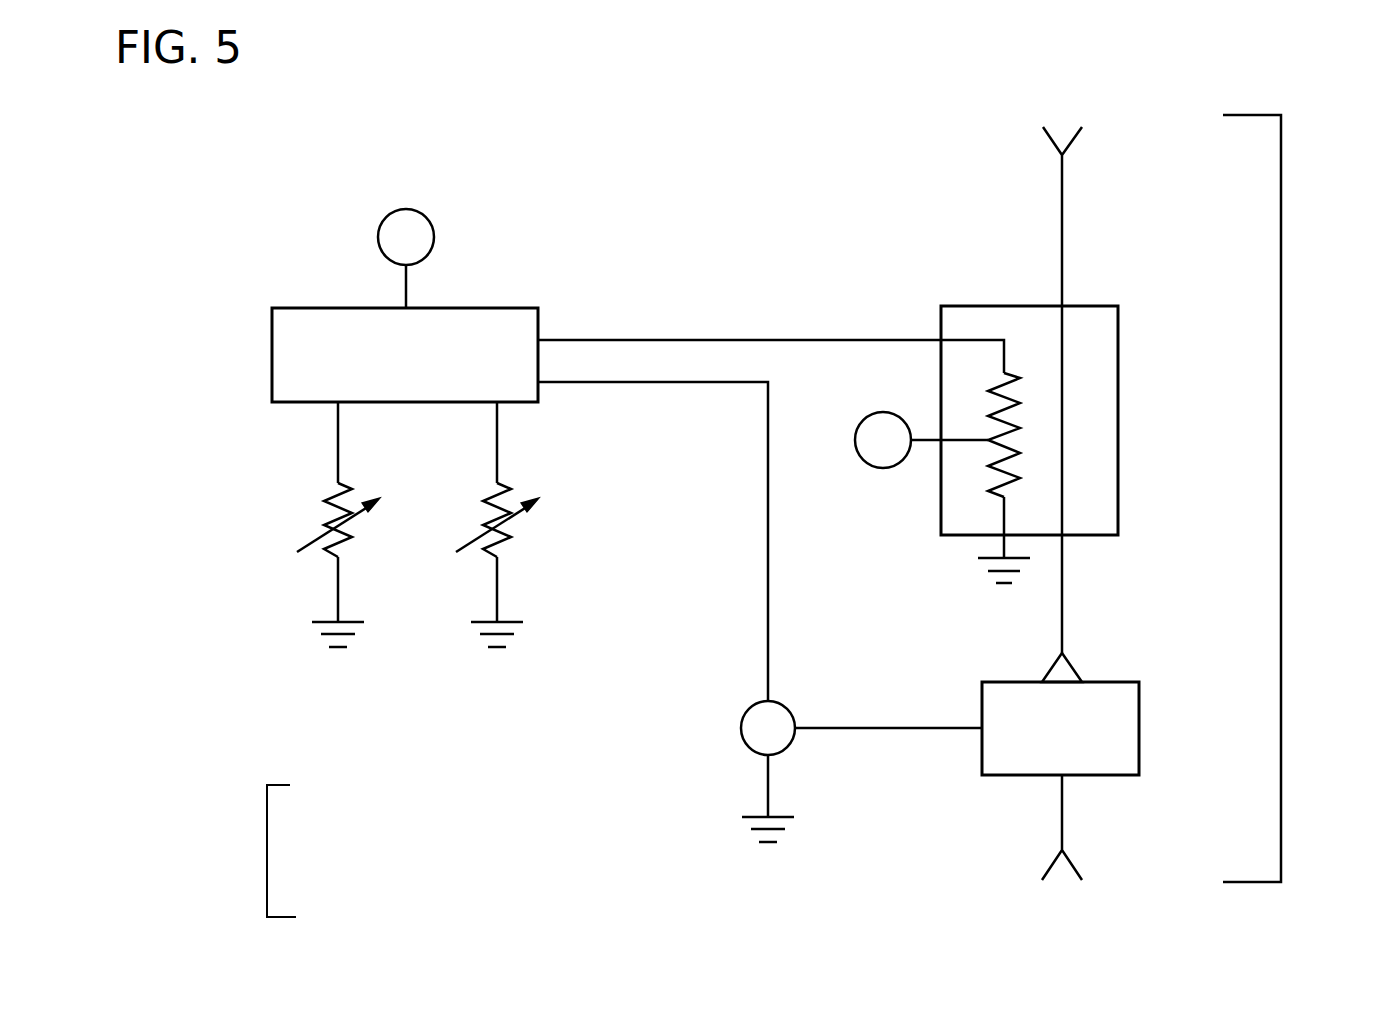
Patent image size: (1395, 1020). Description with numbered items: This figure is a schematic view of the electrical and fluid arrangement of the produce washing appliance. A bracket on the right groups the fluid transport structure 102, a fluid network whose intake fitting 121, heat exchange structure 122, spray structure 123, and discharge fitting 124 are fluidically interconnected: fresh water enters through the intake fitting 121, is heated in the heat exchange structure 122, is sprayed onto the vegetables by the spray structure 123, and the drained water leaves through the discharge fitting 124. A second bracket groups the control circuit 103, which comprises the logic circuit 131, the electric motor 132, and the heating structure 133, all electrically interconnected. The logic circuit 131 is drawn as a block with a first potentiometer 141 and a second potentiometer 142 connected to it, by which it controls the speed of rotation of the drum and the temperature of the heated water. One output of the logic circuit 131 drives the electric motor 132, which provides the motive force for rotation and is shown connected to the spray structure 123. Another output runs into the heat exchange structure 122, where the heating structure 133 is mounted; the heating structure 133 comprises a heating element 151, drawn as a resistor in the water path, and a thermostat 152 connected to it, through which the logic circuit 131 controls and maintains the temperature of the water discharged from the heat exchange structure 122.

The fluid transport structure 102 is at (1281, 503).
The control circuit 103 is at (267, 850).
The intake fitting 121 is at (1075, 148).
The heat exchange structure 122 is at (1118, 340).
The spray structure 123 is at (1077, 657).
The discharge fitting 124 is at (1075, 860).
The logic circuit 131 is at (499, 325).
The electric motor 132 is at (741, 722).
The heating structure 133 is at (929, 365).
The first potentiometer 141 is at (352, 548).
The second potentiometer 142 is at (510, 540).
The heating element 151 is at (993, 422).
The thermostat 152 is at (883, 412).